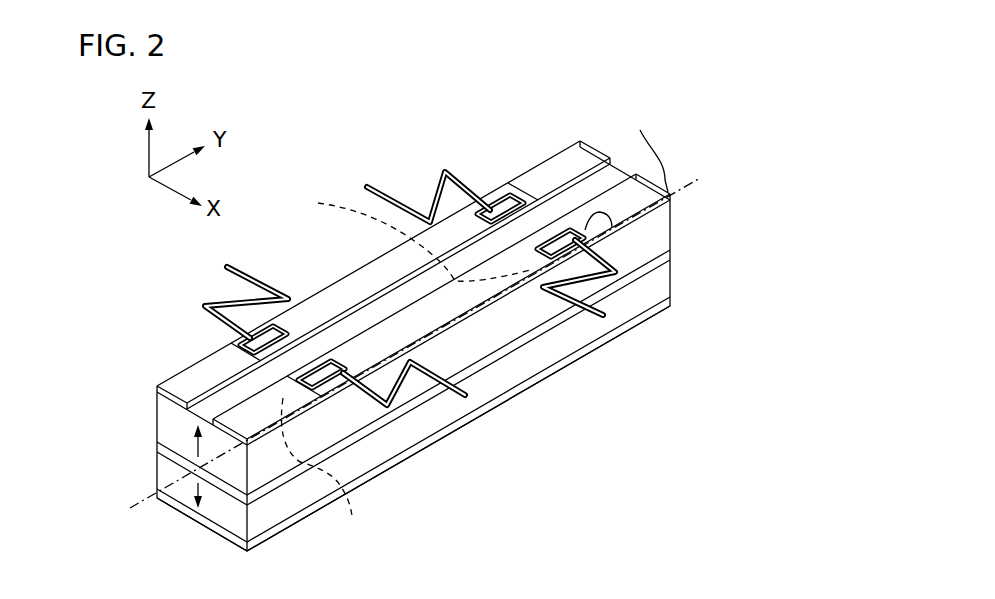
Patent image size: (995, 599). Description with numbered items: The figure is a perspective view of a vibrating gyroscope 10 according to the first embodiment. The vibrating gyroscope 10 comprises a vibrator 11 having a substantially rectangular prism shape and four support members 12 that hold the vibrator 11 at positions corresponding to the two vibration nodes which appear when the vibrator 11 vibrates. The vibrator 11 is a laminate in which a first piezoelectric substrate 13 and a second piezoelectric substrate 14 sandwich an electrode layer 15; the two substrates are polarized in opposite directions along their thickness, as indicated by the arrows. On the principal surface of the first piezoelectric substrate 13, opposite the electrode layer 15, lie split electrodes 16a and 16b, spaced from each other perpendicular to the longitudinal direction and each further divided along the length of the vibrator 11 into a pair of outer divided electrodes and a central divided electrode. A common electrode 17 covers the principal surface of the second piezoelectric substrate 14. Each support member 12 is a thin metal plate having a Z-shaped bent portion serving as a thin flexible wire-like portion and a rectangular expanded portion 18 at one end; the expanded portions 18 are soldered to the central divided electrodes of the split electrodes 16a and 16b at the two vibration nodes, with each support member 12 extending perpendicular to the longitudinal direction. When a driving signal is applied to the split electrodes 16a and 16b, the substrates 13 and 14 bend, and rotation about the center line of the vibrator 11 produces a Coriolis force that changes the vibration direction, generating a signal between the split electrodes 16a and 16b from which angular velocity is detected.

The vibrating gyroscope 10 is at (712, 157).
The vibrator 11 is at (680, 206).
The support member 12 is at (366, 186).
The first piezoelectric substrate 13 is at (172, 422).
The second piezoelectric substrate 14 is at (175, 480).
The electrode layer 15 is at (172, 452).
The split electrode 16a is at (372, 284).
The split electrode 16b is at (530, 300).
The common electrode 17 is at (225, 533).
The expanded portion 18 is at (492, 200).